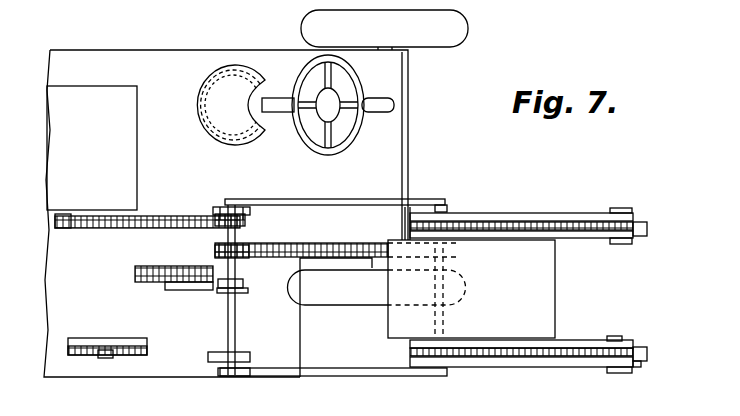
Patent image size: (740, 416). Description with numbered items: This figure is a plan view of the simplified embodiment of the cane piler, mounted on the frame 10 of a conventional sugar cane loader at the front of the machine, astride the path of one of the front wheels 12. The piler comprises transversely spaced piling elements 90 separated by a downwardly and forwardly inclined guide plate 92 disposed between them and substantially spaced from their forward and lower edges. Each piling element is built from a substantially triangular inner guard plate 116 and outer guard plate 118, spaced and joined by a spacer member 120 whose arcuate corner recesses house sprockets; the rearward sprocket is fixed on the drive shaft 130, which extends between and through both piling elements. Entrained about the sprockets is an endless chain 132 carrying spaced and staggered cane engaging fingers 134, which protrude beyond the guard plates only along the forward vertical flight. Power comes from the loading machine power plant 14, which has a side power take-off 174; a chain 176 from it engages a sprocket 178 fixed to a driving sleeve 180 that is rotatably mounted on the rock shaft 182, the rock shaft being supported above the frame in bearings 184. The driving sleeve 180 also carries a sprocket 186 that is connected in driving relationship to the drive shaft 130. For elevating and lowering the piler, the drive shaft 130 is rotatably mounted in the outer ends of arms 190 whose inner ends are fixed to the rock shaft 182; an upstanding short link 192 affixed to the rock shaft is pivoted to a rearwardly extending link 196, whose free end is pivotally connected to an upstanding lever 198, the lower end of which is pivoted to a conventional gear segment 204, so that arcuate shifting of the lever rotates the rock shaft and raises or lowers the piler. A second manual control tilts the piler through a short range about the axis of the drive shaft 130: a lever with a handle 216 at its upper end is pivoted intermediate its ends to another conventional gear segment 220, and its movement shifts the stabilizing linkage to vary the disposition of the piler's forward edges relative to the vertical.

The frame 10 is at (158, 366).
The wheel 12 is at (425, 47).
The power plant 14 is at (67, 181).
The piling element 90 is at (652, 226).
The guide plate 92 is at (557, 293).
The inner guard plate 116 is at (595, 239).
The outer guard plate 118 is at (590, 214).
The spacer member 120 is at (548, 221).
The drive shaft 130 is at (448, 210).
The endless chain 132 is at (637, 367).
The cane engaging fingers 134 is at (648, 233).
The side power take-off 174 is at (57, 215).
The chain 176 is at (156, 218).
The sprocket 178 is at (262, 212).
The driving sleeve 180 is at (240, 241).
The rock shaft 182 is at (236, 322).
The bearings 184 is at (230, 208).
The sprocket 186 is at (218, 251).
The arms 190 is at (353, 205).
The short link 192 is at (239, 284).
The link 196 is at (230, 293).
The lever 198 is at (166, 289).
The gear segment 204 is at (172, 268).
The handle 216 is at (105, 358).
The gear segment 220 is at (70, 347).